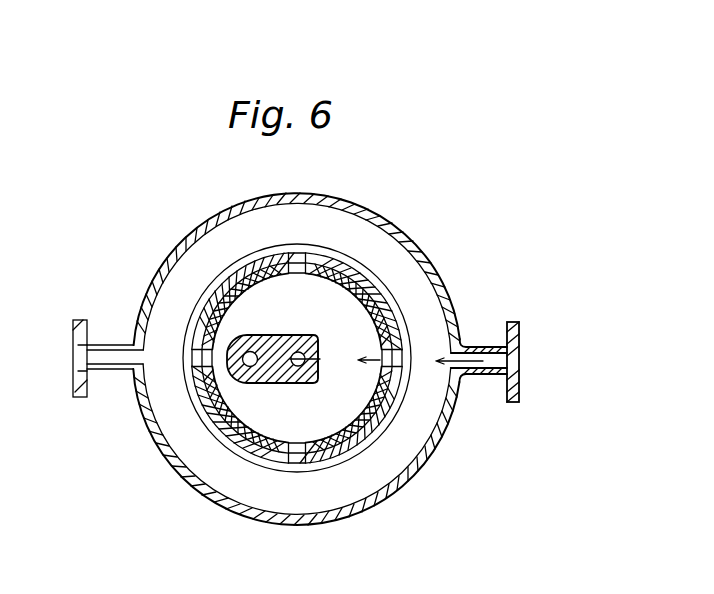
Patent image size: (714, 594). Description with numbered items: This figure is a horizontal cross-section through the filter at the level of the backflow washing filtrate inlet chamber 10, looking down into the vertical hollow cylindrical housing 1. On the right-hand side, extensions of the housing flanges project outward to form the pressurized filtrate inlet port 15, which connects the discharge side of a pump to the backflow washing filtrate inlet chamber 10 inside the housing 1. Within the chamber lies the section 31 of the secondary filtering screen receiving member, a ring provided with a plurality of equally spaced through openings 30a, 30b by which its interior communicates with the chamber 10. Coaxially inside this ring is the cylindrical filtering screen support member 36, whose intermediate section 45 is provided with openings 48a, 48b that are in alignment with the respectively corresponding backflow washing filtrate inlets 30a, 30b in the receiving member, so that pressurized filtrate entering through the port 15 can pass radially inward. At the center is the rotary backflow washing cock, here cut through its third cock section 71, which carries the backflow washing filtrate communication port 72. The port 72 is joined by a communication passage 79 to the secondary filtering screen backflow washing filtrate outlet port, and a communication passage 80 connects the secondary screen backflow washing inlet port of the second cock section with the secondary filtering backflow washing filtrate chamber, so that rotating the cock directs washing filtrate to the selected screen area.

The housing 1 is at (440, 440).
The backflow washing filtrate inlet chamber 10 is at (428, 403).
The pressurized filtrate inlet port 15 is at (520, 360).
The section of the secondary filtering screen receiving member 31 is at (362, 282).
The intermediate section 45 is at (297, 358).
The filtering screen support member 36 is at (322, 297).
The through opening 30a is at (398, 366).
The through opening 30b is at (298, 258).
The opening 48a is at (393, 347).
The opening 48b is at (305, 266).
The third cock section 71 is at (257, 373).
The backflow washing filtrate communication port 72 is at (318, 373).
The communication passage 79 is at (299, 367).
The communication passage 80 is at (250, 367).